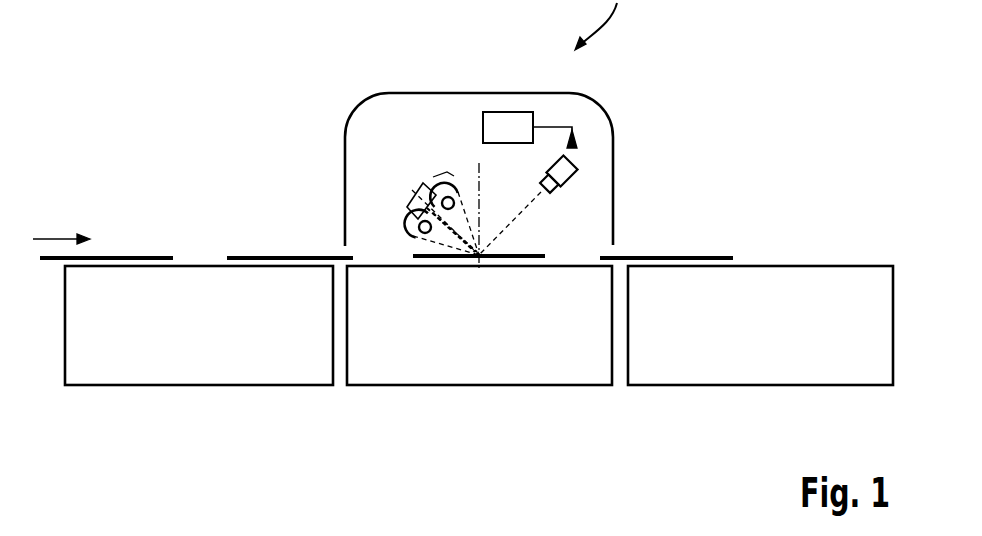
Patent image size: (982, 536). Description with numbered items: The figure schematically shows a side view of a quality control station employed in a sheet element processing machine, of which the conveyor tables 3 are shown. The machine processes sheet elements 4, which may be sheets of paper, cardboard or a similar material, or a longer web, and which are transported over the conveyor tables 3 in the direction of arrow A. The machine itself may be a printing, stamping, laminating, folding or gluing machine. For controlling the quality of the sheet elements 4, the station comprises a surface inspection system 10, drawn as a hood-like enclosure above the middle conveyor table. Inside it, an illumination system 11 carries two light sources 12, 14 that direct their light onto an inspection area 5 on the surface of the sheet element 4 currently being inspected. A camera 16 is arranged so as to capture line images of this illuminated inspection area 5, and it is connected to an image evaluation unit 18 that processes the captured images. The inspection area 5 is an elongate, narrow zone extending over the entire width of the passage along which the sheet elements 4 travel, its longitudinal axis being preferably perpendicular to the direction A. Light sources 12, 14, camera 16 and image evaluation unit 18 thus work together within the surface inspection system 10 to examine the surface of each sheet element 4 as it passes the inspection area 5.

The conveyor tables 3 is at (201, 386).
The sheet elements 4 is at (258, 256).
The inspection area 5 is at (508, 268).
The surface inspection system 10 is at (418, 130).
The illumination system 11 is at (411, 190).
The light source 12 is at (407, 207).
The light source 14 is at (433, 183).
The camera 16 is at (567, 177).
The image evaluation unit 18 is at (505, 112).
The direction of transport A is at (52, 239).